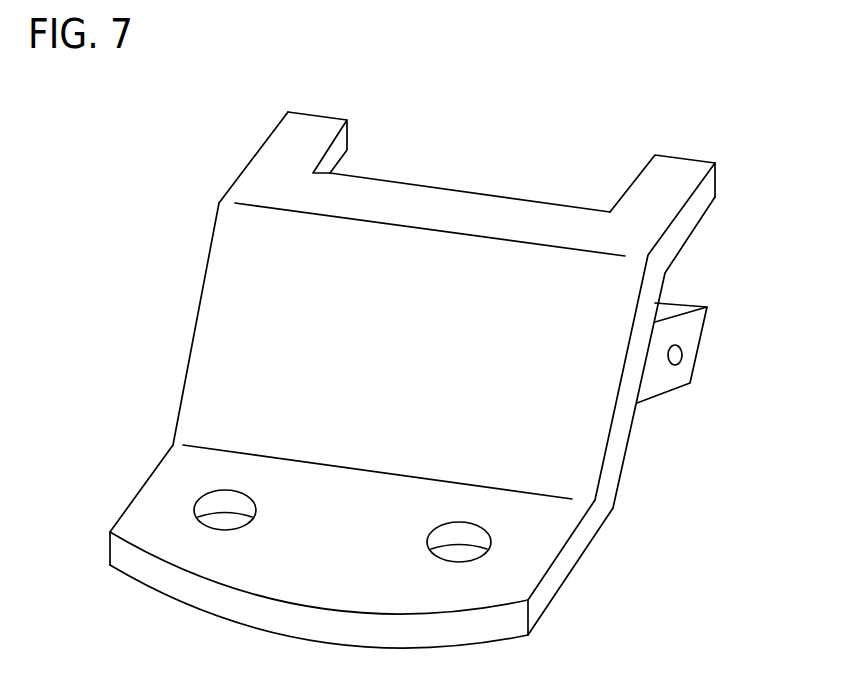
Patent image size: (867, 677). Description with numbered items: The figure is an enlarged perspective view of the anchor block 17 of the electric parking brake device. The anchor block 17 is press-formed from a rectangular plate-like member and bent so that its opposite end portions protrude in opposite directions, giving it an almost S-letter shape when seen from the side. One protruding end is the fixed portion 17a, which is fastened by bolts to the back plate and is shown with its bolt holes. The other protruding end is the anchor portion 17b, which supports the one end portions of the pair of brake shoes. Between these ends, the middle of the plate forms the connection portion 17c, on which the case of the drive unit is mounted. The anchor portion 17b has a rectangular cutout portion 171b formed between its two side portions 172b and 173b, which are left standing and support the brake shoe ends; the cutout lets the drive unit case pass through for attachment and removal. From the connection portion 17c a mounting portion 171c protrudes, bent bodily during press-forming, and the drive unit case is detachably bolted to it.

The anchor block 17 is at (553, 92).
The fixed portion 17a is at (537, 538).
The anchor portion 17b is at (382, 198).
The connection portion 17c is at (242, 318).
The cutout portion 171b is at (507, 202).
The side portion 172b is at (308, 128).
The side portion 173b is at (672, 168).
The mounting portion 171c is at (685, 330).